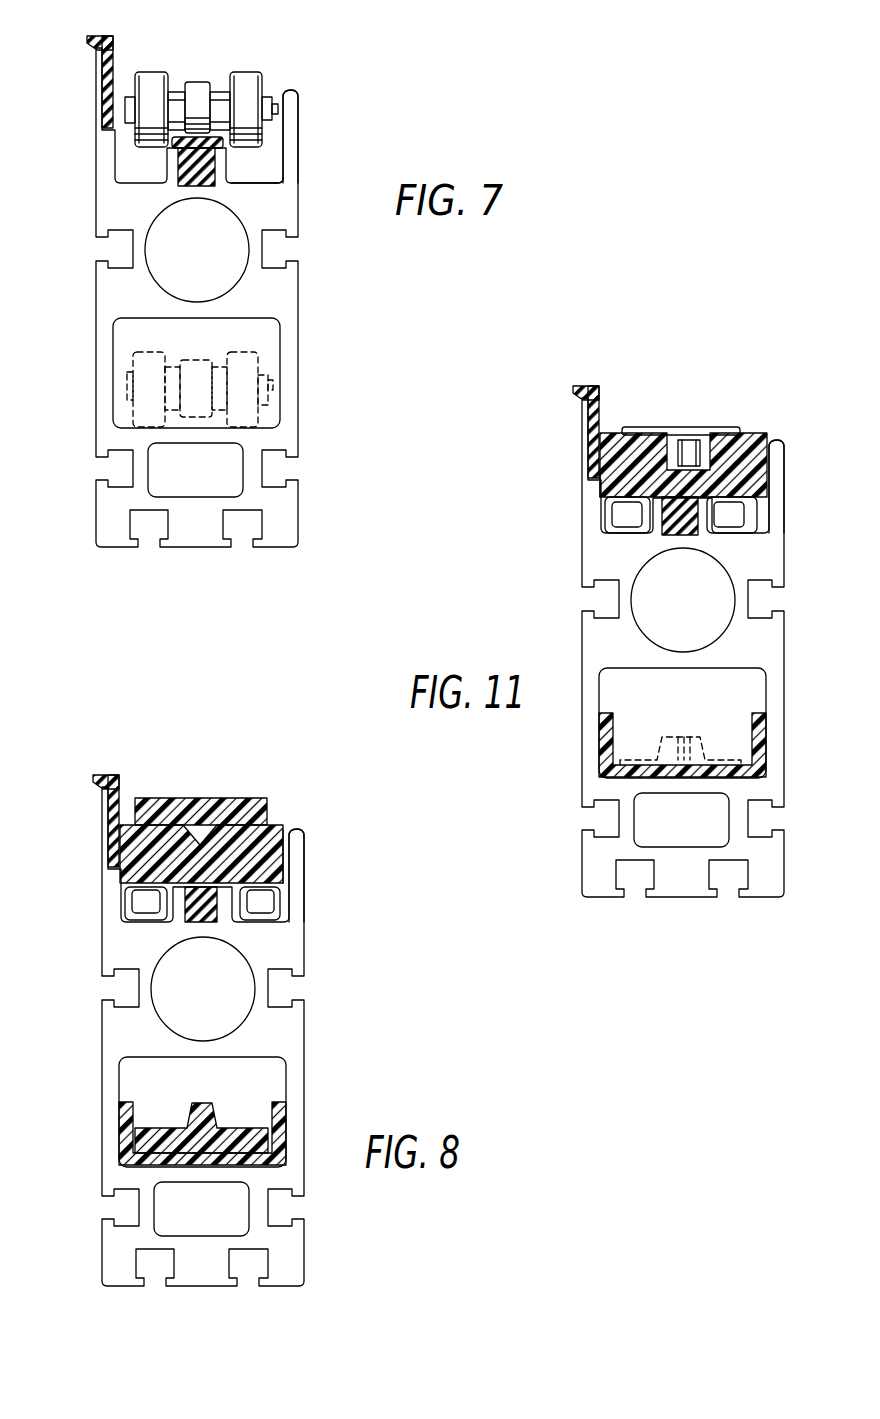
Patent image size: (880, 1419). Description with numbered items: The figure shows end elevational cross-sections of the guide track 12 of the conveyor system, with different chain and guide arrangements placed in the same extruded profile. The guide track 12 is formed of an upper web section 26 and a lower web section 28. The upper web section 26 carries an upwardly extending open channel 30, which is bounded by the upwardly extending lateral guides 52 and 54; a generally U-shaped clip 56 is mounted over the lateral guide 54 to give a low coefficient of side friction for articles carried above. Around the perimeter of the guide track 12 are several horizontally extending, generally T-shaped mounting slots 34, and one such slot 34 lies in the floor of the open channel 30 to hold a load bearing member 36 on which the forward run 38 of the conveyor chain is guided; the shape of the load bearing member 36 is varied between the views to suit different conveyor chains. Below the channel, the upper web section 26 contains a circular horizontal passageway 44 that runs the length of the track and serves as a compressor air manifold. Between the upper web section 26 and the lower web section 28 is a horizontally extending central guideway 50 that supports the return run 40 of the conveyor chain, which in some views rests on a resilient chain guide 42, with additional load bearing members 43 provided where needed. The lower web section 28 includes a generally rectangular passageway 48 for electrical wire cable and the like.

In FIG. 7, the guide track 12 is at (357, 56).
In FIG. 8, the guide track 12 is at (216, 750).
In FIG. 11, the guide track 12 is at (724, 351).
In FIG. 8, the upper web section 26 is at (346, 921).
In FIG. 8, the lower web section 28 is at (346, 1106).
In FIG. 7, the open channel 30 is at (263, 165).
In FIG. 8, the open channel 30 is at (285, 843).
In FIG. 11, the open channel 30 is at (683, 465).
In FIG. 7, the mounting slot 34 is at (212, 163).
In FIG. 8, the mounting slot 34 is at (215, 916).
In FIG. 11, the mounting slot 34 is at (700, 510).
In FIG. 7, the load bearing member 36 is at (210, 186).
In FIG. 8, the load bearing member 36 is at (280, 848).
In FIG. 11, the load bearing member 36 is at (598, 486).
In FIG. 7, the forward run 38 is at (242, 72).
In FIG. 8, the forward run 38 is at (232, 798).
In FIG. 11, the forward run 38 is at (715, 428).
In FIG. 7, the return run 40 is at (262, 410).
In FIG. 8, the return run 40 is at (285, 1150).
In FIG. 11, the return run 40 is at (730, 770).
In FIG. 8, the chain guide 42 is at (262, 1150).
In FIG. 11, the chain guide 42 is at (758, 752).
In FIG. 8, the additional load bearing member 43 is at (118, 912).
In FIG. 11, the additional load bearing member 43 is at (605, 525).
In FIG. 7, the passageway 44 is at (232, 275).
In FIG. 8, the passageway 44 is at (232, 1010).
In FIG. 11, the passageway 44 is at (710, 620).
In FIG. 7, the passageway 48 is at (203, 477).
In FIG. 8, the passageway 48 is at (240, 1222).
In FIG. 11, the passageway 48 is at (668, 835).
In FIG. 7, the central guideway 50 is at (265, 340).
In FIG. 8, the central guideway 50 is at (258, 1085).
In FIG. 11, the central guideway 50 is at (735, 698).
In FIG. 7, the lateral guide 52 is at (296, 103).
In FIG. 8, the lateral guide 52 is at (302, 852).
In FIG. 11, the lateral guide 52 is at (785, 484).
In FIG. 7, the lateral guide 54 is at (100, 86).
In FIG. 8, the lateral guide 54 is at (104, 838).
In FIG. 11, the lateral guide 54 is at (585, 448).
In FIG. 7, the U-shaped clip 56 is at (116, 50).
In FIG. 8, the U-shaped clip 56 is at (112, 780).
In FIG. 11, the U-shaped clip 56 is at (600, 392).